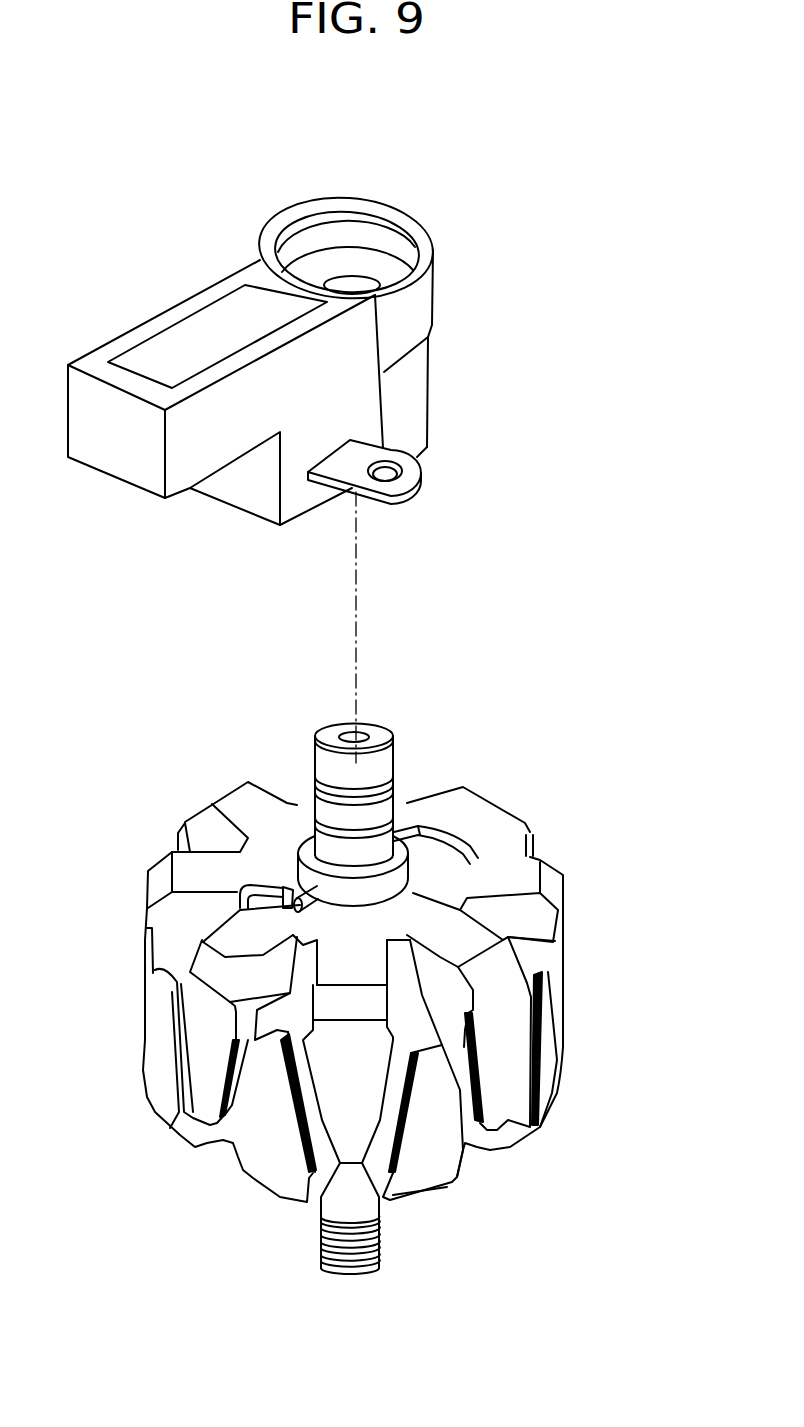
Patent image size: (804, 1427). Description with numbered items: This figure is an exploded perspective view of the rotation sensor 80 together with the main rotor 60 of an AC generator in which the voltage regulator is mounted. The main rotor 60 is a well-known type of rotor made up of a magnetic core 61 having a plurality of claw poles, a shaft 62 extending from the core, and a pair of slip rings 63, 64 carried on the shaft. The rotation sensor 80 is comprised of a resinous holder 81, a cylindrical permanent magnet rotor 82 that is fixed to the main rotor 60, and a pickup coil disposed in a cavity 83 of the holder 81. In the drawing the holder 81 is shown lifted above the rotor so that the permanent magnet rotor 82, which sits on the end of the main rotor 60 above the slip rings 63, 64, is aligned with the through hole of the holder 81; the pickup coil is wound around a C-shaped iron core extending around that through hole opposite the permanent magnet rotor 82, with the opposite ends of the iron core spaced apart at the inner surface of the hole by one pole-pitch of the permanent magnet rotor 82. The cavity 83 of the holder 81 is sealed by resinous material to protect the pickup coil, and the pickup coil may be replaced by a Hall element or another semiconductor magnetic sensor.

The main rotor 60 is at (415, 1006).
The magnetic core 61 is at (447, 880).
The shaft 62 is at (352, 1257).
The slip ring 63 is at (382, 807).
The slip ring 64 is at (378, 847).
The rotation sensor 80 is at (355, 474).
The holder 81 is at (312, 420).
The permanent magnet rotor 82 is at (385, 760).
The cavity 83 is at (207, 348).